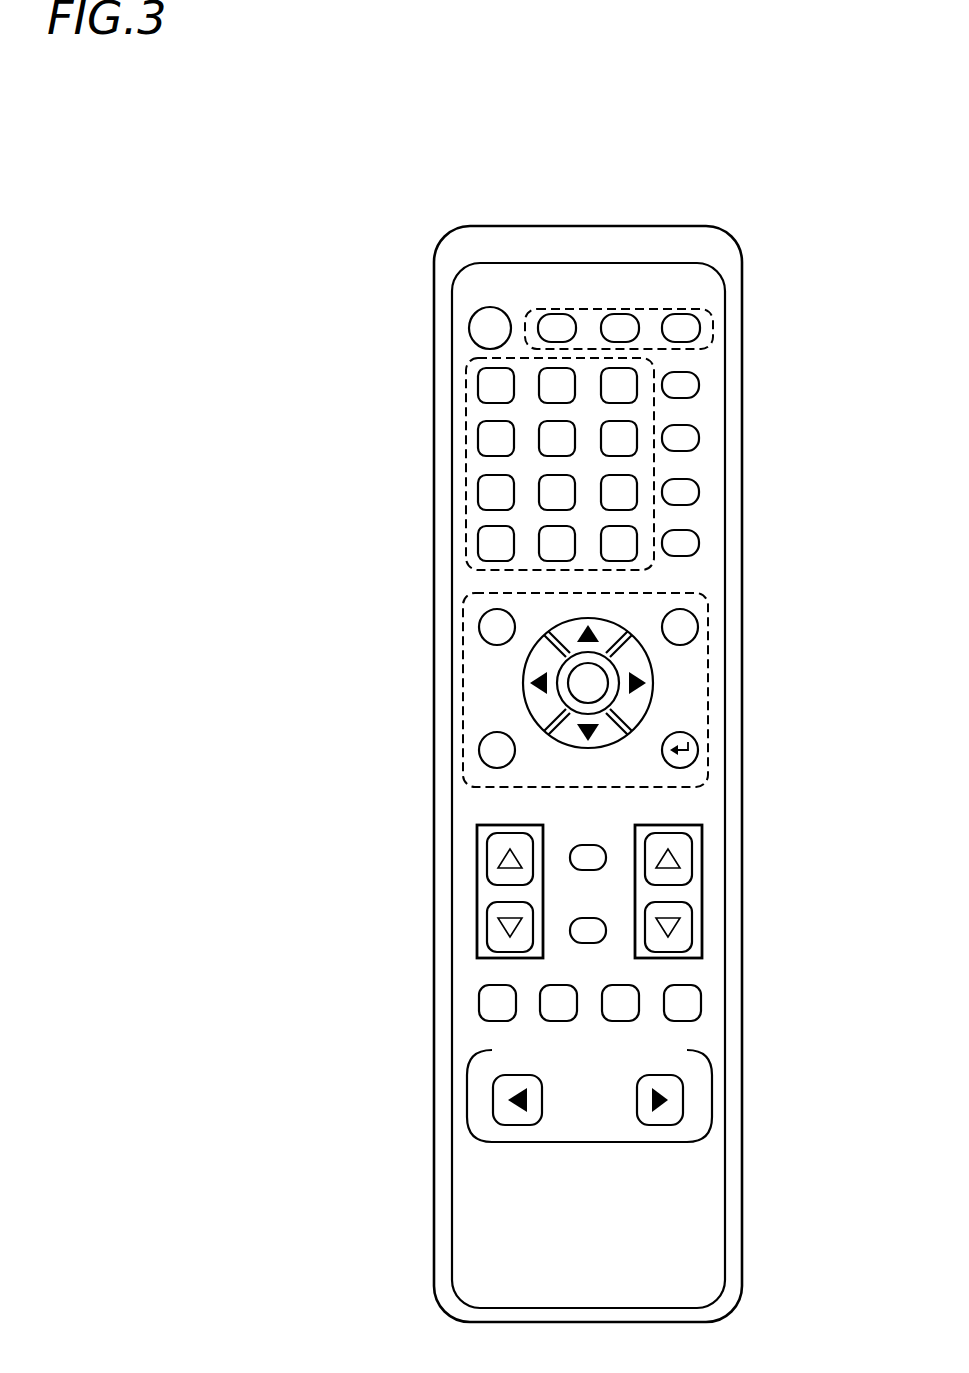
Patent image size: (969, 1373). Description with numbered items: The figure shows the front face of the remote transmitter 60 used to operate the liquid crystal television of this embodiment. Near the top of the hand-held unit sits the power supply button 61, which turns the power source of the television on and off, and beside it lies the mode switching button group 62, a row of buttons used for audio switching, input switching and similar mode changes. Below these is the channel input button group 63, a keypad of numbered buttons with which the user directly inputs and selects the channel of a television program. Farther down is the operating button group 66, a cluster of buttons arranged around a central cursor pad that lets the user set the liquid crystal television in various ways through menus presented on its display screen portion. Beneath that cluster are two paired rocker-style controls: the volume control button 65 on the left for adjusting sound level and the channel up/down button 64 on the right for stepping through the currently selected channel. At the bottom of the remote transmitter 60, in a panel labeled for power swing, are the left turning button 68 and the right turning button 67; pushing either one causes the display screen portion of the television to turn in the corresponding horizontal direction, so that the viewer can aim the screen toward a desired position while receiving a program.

The remote transmitter 60 is at (355, 178).
The power supply button 61 is at (490, 330).
The mode switching button group 62 is at (678, 307).
The channel input button group 63 is at (465, 356).
The channel up/down button 64 is at (688, 893).
The volume control button 65 is at (487, 893).
The operating button group 66 is at (707, 690).
The right turning button 67 is at (672, 1088).
The left turning button 68 is at (507, 1088).